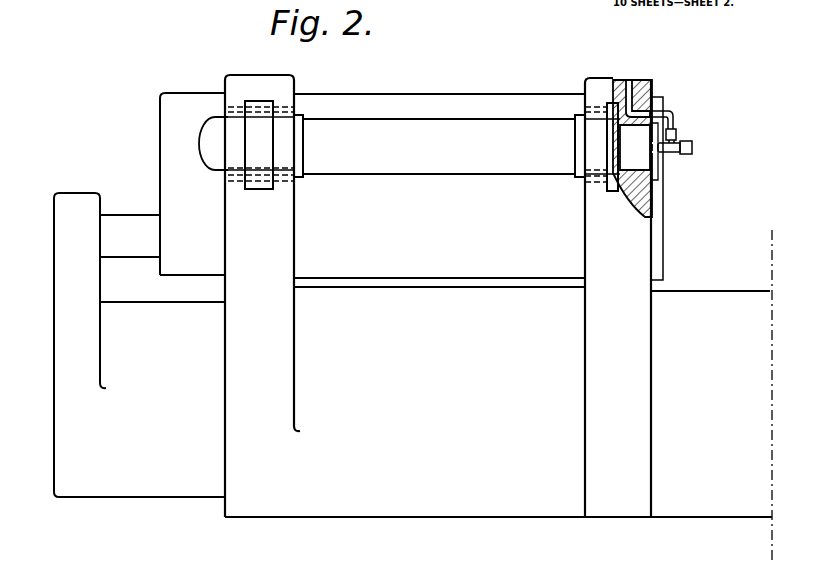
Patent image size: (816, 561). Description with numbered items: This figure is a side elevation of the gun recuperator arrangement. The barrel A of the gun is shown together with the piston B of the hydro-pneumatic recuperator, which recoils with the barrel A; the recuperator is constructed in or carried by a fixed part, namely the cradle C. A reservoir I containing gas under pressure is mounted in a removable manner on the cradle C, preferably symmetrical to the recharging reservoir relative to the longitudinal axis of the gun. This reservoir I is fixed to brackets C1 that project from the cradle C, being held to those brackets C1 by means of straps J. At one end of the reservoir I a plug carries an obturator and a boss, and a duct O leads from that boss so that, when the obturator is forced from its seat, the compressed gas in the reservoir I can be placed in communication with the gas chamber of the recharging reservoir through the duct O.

The barrel A is at (155, 470).
The piston B is at (129, 222).
The cradle C is at (415, 500).
The brackets C1 is at (272, 248).
The reservoir I is at (417, 128).
The straps J is at (256, 137).
The duct O is at (670, 110).